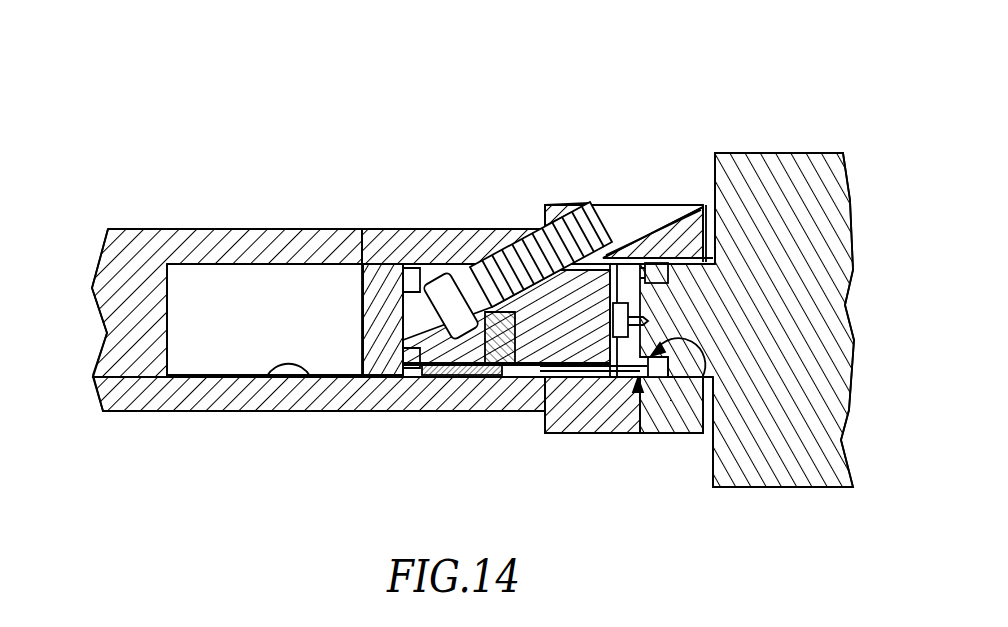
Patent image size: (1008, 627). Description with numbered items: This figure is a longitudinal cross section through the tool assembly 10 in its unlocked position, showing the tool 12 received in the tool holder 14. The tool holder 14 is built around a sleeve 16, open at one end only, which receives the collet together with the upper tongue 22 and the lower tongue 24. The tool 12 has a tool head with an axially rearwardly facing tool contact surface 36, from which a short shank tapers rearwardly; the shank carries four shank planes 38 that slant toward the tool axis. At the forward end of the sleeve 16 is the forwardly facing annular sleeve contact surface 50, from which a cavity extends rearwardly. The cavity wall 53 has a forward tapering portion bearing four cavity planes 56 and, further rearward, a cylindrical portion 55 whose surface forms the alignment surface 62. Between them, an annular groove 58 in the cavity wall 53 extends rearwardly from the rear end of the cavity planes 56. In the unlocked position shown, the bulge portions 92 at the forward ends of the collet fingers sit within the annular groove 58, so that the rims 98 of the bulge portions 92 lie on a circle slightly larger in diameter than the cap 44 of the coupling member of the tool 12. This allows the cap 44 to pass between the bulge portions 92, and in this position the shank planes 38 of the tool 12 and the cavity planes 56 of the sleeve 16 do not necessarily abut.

The tool assembly 10 is at (390, 291).
The tool 12 is at (814, 142).
The tool holder 14 is at (450, 299).
The sleeve 16 is at (135, 256).
The upper tongue 22 is at (428, 268).
The lower tongue 24 is at (440, 378).
The tool contact surface 36 is at (716, 178).
The shank planes 38 is at (670, 255).
The cap 44 is at (602, 392).
The sleeve contact surface 50 is at (708, 205).
The cavity wall 53 is at (298, 273).
The cylindrical portion 55 is at (244, 314).
The cavity planes 56 is at (645, 255).
The annular groove 58 is at (668, 380).
The alignment surface 62 is at (274, 378).
The bulge portion 92 is at (612, 380).
The rim 98 is at (672, 378).